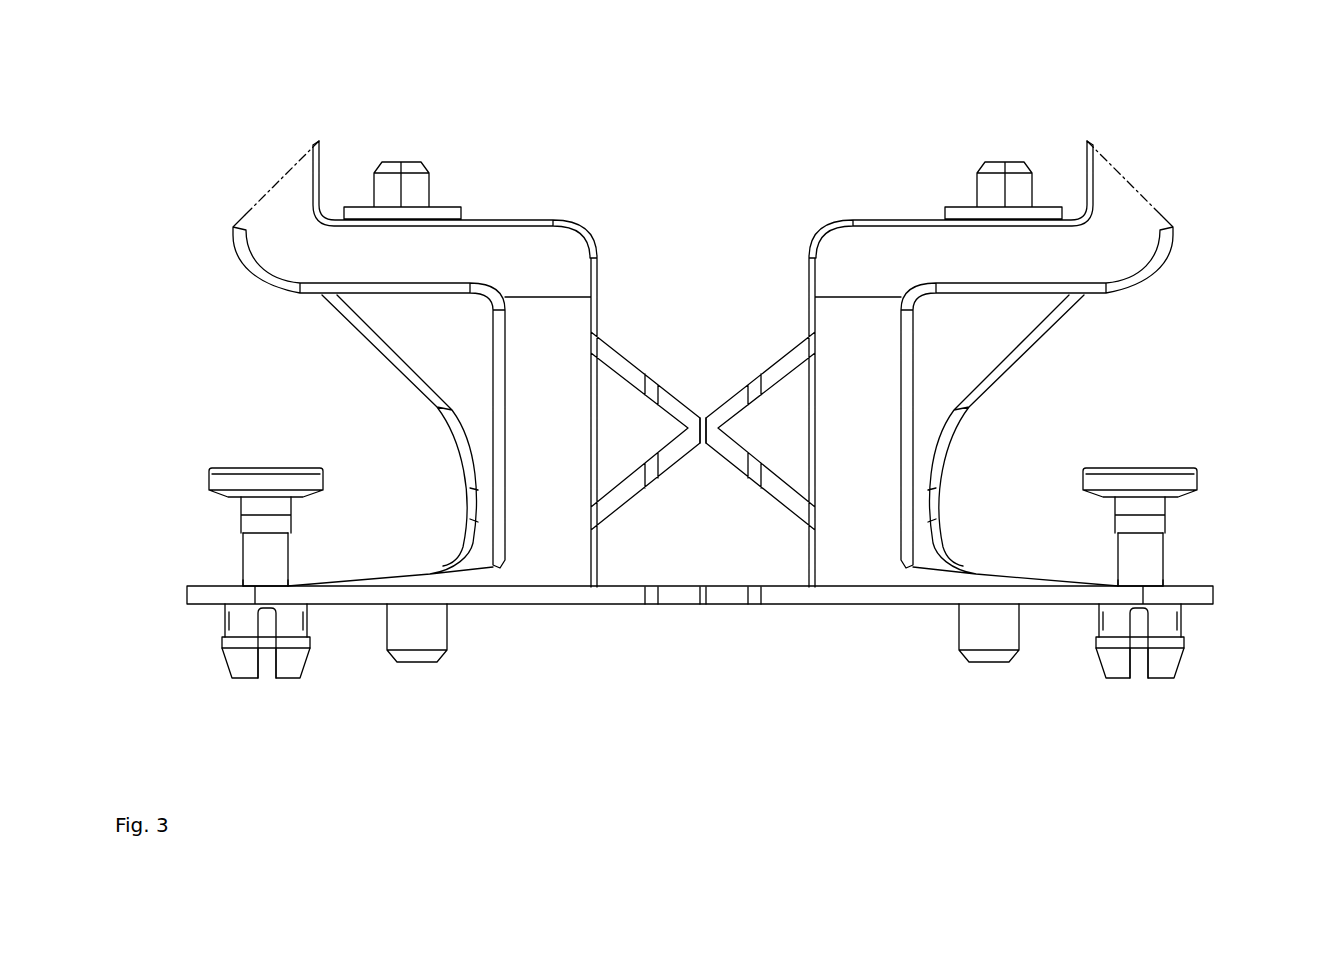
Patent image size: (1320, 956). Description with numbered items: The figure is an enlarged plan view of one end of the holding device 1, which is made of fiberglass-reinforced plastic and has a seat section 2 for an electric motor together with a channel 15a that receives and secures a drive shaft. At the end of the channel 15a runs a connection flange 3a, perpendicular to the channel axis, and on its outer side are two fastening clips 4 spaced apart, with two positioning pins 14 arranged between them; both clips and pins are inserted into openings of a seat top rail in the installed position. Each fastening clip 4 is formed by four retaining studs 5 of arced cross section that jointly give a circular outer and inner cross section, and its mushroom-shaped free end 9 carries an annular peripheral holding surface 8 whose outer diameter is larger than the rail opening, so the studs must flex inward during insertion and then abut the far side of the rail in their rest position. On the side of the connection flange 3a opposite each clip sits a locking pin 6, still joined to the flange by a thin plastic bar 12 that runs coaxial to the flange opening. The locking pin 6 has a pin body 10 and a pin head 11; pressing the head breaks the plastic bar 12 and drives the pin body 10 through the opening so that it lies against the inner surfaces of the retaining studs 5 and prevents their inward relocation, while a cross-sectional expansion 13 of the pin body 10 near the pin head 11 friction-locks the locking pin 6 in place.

The holding device 1 is at (1118, 220).
The seat section 2 is at (1060, 105).
The connection flange 3a is at (1018, 598).
The fastening clip 4 is at (183, 682).
The retaining stud 5 is at (233, 623).
The locking pin 6 is at (202, 515).
The holding surface 8 is at (310, 633).
The free end 9 is at (237, 687).
The pin body 10 is at (257, 559).
The pin head 11 is at (267, 477).
The plastic bar 12 is at (290, 585).
The cross-sectional expansion 13 is at (285, 508).
The positioning pin 14 is at (430, 632).
The channel 15a is at (693, 555).